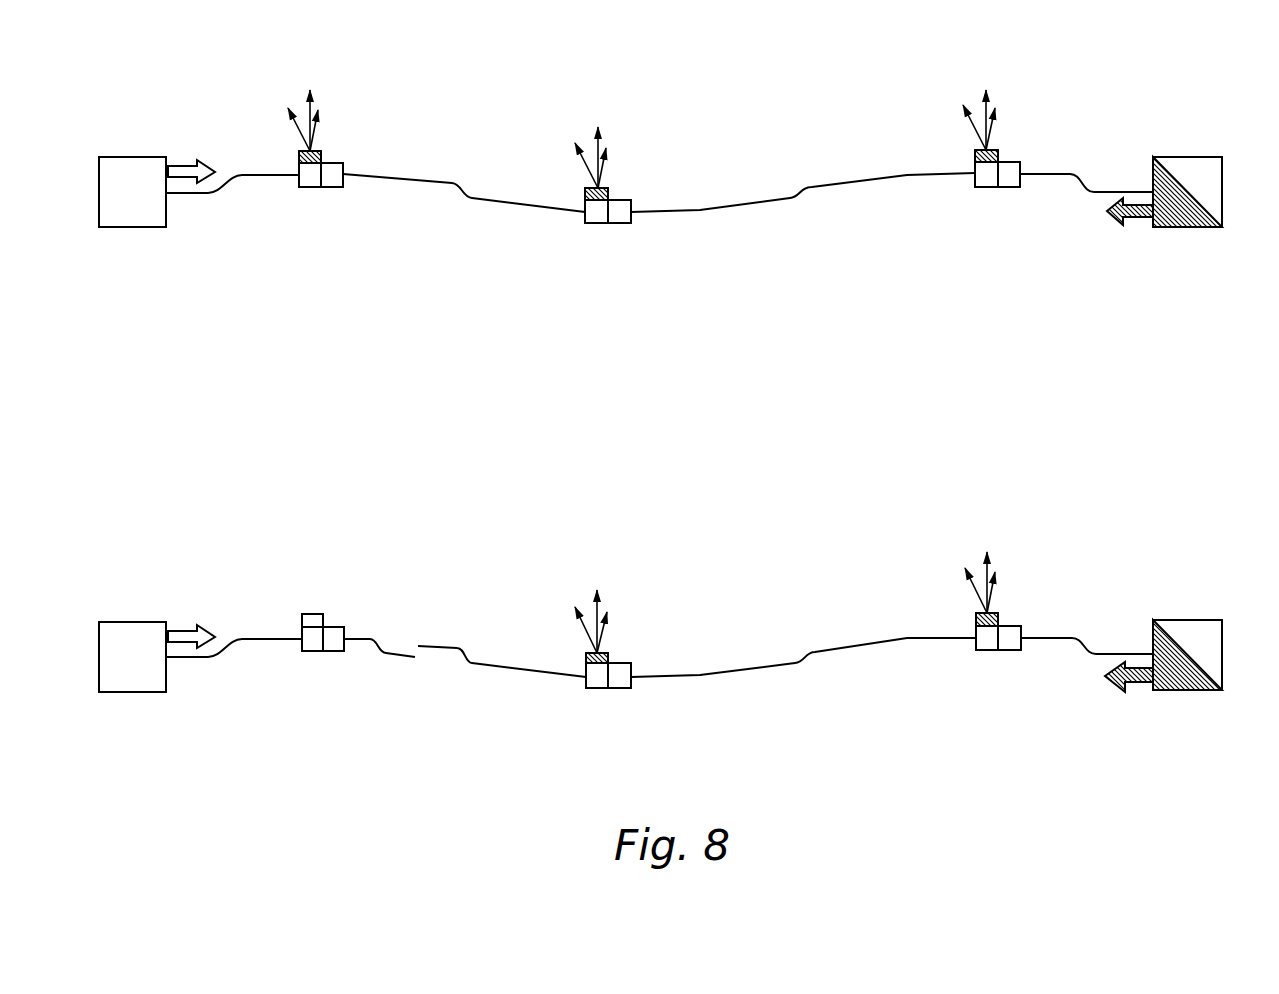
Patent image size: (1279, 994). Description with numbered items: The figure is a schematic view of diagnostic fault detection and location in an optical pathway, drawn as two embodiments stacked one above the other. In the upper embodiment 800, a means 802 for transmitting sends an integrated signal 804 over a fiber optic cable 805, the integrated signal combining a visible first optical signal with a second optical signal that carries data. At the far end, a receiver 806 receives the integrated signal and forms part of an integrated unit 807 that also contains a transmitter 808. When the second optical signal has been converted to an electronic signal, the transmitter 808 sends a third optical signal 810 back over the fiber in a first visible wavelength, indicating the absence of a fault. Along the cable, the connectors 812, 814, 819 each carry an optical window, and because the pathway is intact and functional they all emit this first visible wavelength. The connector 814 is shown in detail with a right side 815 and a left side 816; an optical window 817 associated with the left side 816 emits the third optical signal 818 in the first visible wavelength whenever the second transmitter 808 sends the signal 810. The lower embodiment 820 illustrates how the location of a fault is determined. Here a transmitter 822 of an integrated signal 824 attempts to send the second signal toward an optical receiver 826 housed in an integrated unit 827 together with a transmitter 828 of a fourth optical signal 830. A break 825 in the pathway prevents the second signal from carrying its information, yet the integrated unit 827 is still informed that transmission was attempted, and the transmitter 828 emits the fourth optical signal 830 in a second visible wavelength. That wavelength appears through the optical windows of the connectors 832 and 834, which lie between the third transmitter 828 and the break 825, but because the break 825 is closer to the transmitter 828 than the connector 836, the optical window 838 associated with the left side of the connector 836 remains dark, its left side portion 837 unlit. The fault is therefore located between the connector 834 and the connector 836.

The embodiment 800 is at (93, 153).
The means for transmitting 802 is at (135, 157).
The integrated signal 804 is at (182, 166).
The fiber optic cable 805 is at (261, 174).
The receiver 806 is at (1187, 192).
The integrated unit 807 is at (1222, 102).
The transmitter 808 is at (1190, 227).
The third optical signal 810 is at (1138, 222).
The connector 812 is at (1003, 203).
The connector 814 is at (606, 194).
The right side 815 is at (620, 198).
The left side 816 is at (600, 225).
The optical window 817 is at (585, 195).
The third optical signal 818 is at (613, 130).
The connector 819 is at (327, 205).
The embodiment 820 is at (93, 617).
The transmitter 822 is at (135, 622).
The integrated signal 824 is at (184, 630).
The break 825 is at (425, 657).
The optical receiver 826 is at (1187, 656).
The integrated unit 827 is at (1222, 565).
The transmitter 828 is at (1190, 690).
The fourth optical signal 830 is at (1138, 687).
The connector 832 is at (1005, 670).
The connector 834 is at (613, 705).
The connector 836 is at (310, 653).
The coupler input port 837 is at (312, 652).
The optical window 838 is at (312, 614).